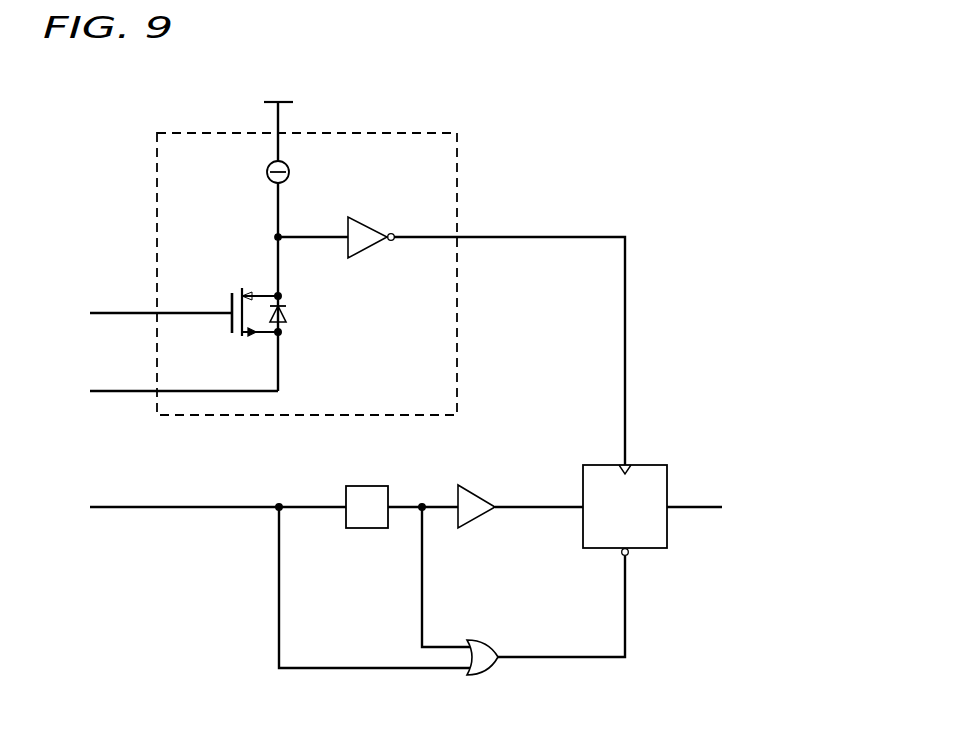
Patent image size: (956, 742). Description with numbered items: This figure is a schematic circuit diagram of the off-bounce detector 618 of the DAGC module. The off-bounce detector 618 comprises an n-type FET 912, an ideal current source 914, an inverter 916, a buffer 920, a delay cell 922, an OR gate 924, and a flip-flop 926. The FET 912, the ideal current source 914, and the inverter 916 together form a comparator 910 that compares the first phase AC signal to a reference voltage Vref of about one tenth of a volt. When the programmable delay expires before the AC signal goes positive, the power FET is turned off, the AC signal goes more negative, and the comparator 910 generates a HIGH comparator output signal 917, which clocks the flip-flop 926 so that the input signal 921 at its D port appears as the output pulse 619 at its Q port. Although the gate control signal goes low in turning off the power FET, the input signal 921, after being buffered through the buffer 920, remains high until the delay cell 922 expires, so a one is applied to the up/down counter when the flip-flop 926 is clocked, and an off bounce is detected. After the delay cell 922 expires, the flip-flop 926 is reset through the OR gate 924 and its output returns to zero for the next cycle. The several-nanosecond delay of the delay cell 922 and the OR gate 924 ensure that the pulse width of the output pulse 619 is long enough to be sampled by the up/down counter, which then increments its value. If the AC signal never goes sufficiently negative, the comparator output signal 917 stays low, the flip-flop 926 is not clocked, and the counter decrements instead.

The off-bounce detector 618 is at (126, 84).
The comparator 910 is at (384, 133).
The ideal current source 914 is at (266, 172).
The inverter 916 is at (366, 223).
The n-type FET 912 is at (232, 302).
The comparator output signal 917 is at (556, 237).
The delay cell 922 is at (369, 486).
The buffer 920 is at (483, 486).
The input signal of the flip-flop 921 is at (548, 505).
The flip-flop 926 is at (648, 466).
The output pulse 619 is at (690, 510).
The OR gate 924 is at (487, 645).